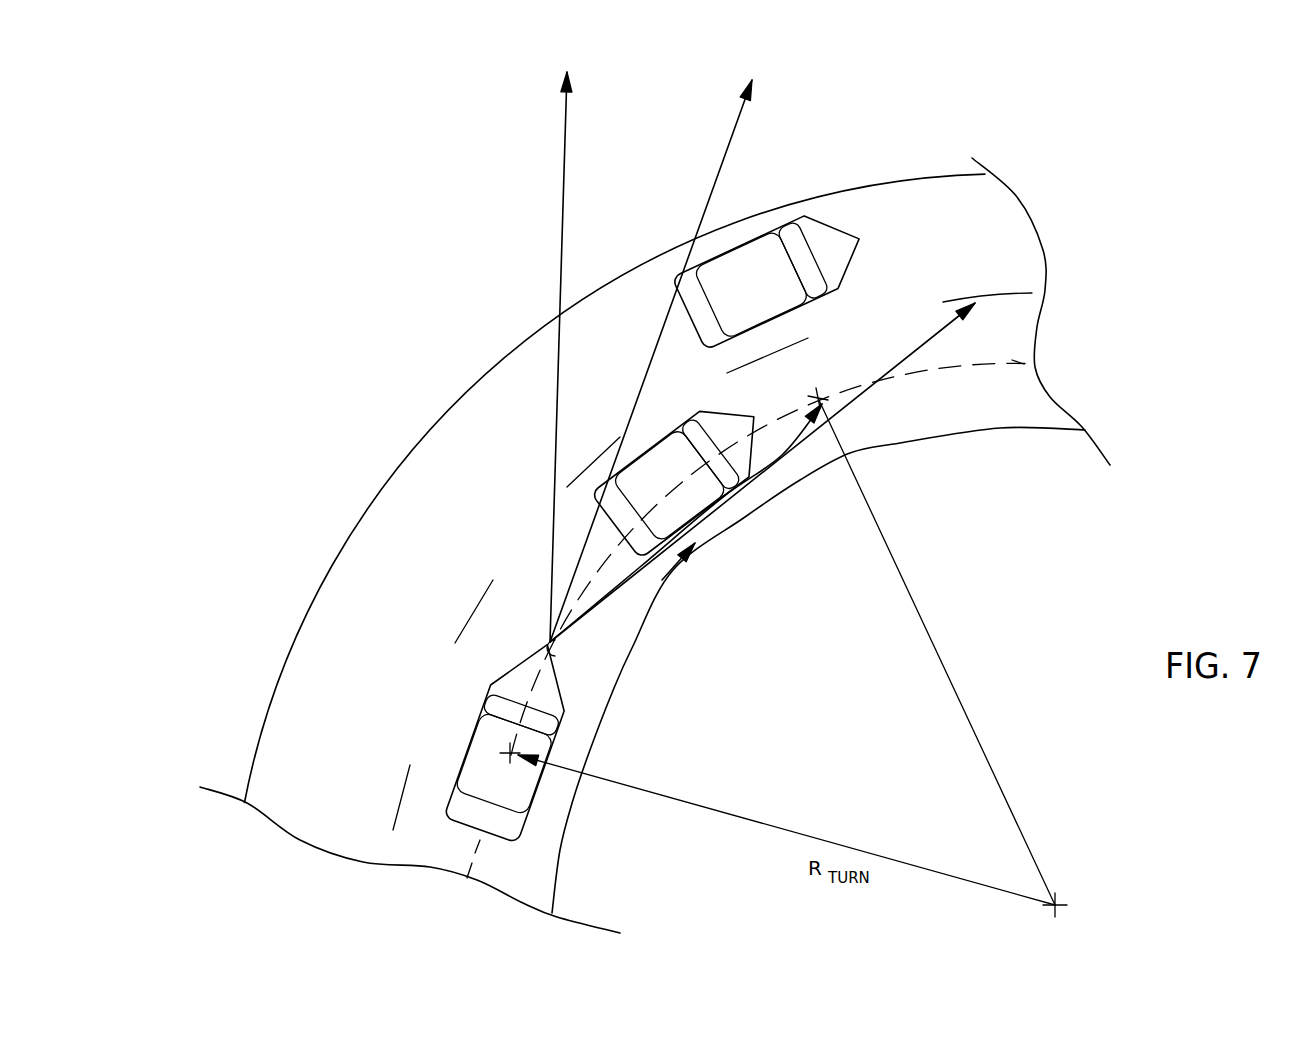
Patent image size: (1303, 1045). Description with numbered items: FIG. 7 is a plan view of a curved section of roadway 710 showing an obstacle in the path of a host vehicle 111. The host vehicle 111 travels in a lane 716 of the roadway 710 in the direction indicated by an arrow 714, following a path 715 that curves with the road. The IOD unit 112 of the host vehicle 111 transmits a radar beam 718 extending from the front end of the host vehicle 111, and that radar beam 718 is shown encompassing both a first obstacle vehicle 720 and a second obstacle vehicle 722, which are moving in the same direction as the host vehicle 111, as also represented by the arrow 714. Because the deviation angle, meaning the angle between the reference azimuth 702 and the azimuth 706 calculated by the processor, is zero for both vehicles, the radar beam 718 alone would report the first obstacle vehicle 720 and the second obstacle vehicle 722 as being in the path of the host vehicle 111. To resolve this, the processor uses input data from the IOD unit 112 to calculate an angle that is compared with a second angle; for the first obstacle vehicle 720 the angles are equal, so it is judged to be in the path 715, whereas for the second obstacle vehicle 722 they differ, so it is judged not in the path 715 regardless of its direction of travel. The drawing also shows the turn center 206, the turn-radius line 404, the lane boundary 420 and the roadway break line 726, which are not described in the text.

The host vehicle 111 is at (565, 712).
The IOD unit 112 is at (556, 652).
The center of turn 206 is at (1017, 880).
The turn radius line 404 is at (957, 690).
The lane boundary 420 is at (748, 517).
The reference azimuth 702 is at (743, 117).
The azimuth 706 is at (719, 173).
The roadway 710 is at (658, 267).
The arrow 714 is at (683, 567).
The path 715 is at (1018, 363).
The lane 716 is at (1028, 315).
The radar beam 718 is at (560, 163).
The first obstacle vehicle 720 is at (740, 410).
The second obstacle vehicle 722 is at (851, 235).
The roadway break line 726 is at (1010, 212).